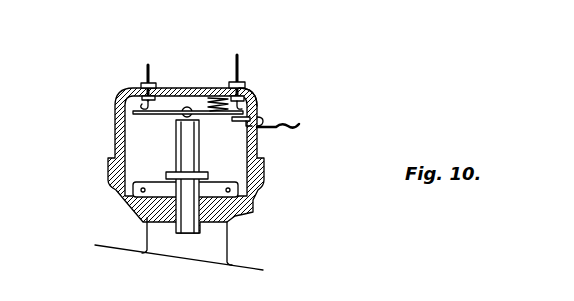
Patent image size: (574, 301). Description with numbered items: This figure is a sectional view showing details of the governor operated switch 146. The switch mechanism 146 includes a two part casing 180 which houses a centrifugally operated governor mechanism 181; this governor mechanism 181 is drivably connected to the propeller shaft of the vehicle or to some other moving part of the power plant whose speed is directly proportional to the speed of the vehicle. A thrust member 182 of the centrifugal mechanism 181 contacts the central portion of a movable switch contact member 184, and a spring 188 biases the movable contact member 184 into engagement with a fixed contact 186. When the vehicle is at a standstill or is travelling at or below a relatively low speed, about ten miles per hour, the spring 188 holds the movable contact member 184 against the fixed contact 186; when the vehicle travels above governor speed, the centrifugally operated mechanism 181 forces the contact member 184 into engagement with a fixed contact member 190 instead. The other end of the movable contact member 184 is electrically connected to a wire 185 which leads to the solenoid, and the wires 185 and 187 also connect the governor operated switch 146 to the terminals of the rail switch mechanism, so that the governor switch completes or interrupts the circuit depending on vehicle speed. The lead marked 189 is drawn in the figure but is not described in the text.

The governor operated switch 146 is at (107, 88).
The two part casing 180 is at (118, 136).
The centrifugally operated governor mechanism 181 is at (163, 191).
The thrust member 182 is at (198, 126).
The movable switch contact member 184 is at (250, 91).
The wire 185 is at (148, 68).
The fixed contact 186 is at (259, 118).
The wire 187 is at (238, 62).
The spring 188 is at (212, 98).
The lead wire 189 is at (291, 128).
The fixed contact member 190 is at (243, 110).